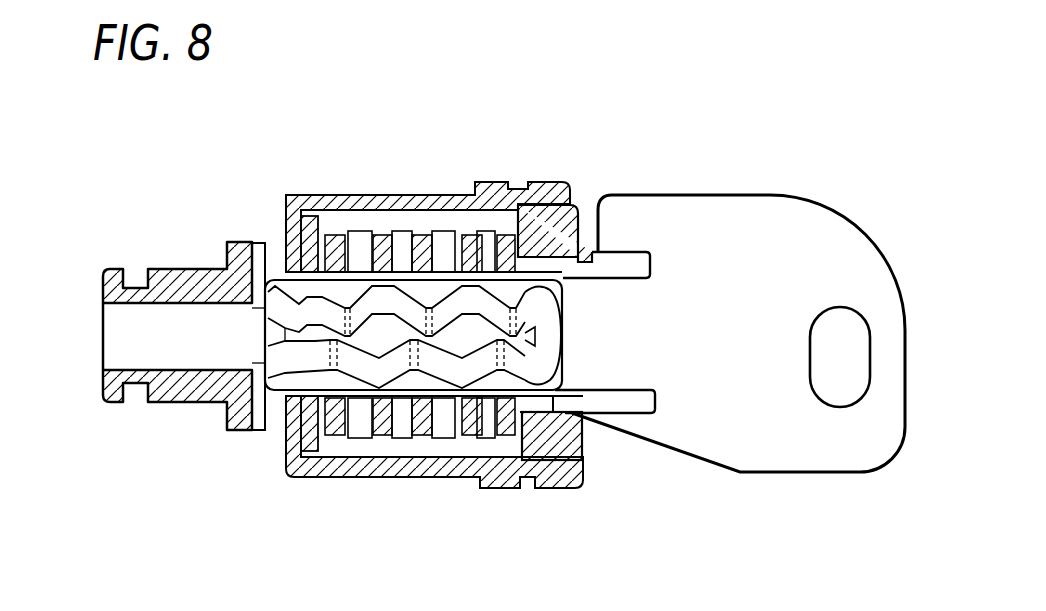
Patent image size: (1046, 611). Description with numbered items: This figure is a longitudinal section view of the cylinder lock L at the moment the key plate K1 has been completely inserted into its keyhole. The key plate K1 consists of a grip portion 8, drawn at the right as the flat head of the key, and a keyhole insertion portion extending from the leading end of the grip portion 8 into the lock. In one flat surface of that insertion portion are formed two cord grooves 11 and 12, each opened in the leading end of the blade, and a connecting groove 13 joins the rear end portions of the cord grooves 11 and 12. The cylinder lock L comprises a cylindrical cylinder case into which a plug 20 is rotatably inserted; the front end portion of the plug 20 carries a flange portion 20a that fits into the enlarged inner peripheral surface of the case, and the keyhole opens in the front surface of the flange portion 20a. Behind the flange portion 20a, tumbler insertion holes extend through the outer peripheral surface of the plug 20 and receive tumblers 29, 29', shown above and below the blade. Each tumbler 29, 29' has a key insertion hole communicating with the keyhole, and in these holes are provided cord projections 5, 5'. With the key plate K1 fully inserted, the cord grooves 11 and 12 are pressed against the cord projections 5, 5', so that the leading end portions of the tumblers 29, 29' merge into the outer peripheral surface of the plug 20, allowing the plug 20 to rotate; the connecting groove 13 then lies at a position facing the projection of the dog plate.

The cylinder lock L is at (231, 221).
The plug 20 is at (403, 232).
The flange portion 20a is at (584, 442).
The tumbler 29 is at (320, 264).
The tumbler 29' is at (276, 287).
The cord projection 5 is at (431, 213).
The cord projection 5' is at (426, 467).
The cord groove 11 is at (448, 300).
The cord groove 12 is at (488, 368).
The connecting groove 13 is at (553, 328).
The grip portion 8 is at (762, 212).
The key plate K1 is at (800, 184).